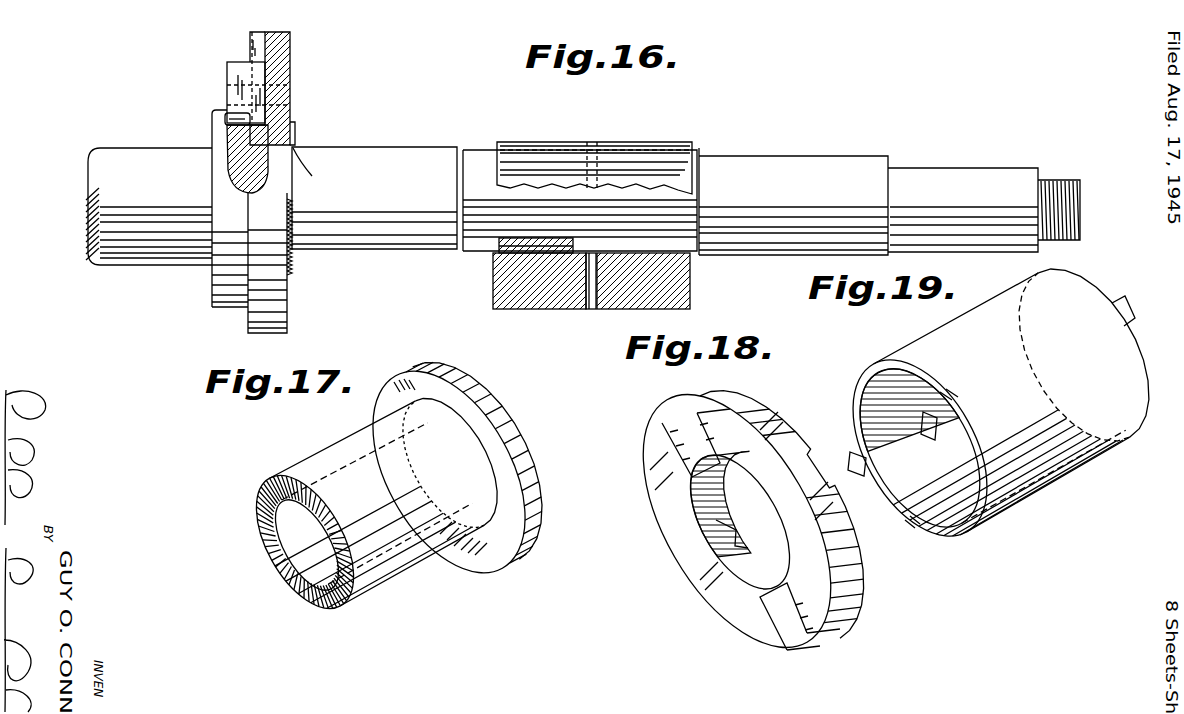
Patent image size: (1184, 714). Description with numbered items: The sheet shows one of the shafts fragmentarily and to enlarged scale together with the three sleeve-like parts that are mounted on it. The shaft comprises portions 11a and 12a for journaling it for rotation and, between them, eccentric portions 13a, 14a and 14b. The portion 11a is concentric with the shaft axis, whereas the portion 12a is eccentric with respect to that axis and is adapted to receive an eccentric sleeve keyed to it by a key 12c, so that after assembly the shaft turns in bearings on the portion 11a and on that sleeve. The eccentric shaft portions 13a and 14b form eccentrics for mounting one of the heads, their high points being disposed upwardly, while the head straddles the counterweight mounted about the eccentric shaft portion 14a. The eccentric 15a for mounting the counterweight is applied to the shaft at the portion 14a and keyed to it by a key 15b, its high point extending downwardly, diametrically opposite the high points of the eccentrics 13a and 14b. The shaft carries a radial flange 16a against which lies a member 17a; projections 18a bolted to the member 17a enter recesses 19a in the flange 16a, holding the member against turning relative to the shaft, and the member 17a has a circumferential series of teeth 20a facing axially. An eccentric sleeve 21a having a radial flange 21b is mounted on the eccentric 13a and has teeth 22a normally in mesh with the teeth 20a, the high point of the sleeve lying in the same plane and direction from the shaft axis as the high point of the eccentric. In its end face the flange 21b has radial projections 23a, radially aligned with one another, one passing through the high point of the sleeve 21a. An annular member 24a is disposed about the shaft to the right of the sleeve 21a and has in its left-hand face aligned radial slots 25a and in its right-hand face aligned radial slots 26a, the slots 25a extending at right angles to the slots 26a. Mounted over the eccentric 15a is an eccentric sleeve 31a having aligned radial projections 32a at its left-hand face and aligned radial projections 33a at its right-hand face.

In FIG. 16, the shaft portion 11a is at (119, 170).
In FIG. 16, the shaft portion 12a is at (958, 158).
In FIG. 16, the key 12c is at (1038, 252).
In FIG. 16, the eccentric shaft portion 13a is at (397, 153).
In FIG. 16, the eccentric shaft portion 14a is at (478, 160).
In FIG. 16, the eccentric shaft portion 14b is at (768, 168).
In FIG. 16, the eccentric 15a is at (637, 122).
In FIG. 16, the key 15b is at (495, 250).
In FIG. 16, the radial flange 16a is at (227, 217).
In FIG. 16, the member 17a is at (272, 133).
In FIG. 16, the projection 18a is at (232, 67).
In FIG. 16, the recess 19a is at (227, 113).
In FIG. 16, the teeth 20a is at (293, 213).
In FIG. 17, the eccentric sleeve 21a is at (323, 453).
In FIG. 17, the radial flange 21b is at (493, 440).
In FIG. 17, the teeth 22a is at (282, 570).
In FIG. 17, the radial projections 23a is at (427, 372).
In FIG. 18, the annular member 24a is at (857, 590).
In FIG. 18, the radial slots 25a is at (700, 411).
In FIG. 18, the radial slots 26a is at (690, 533).
In FIG. 19, the eccentric sleeve 31a is at (912, 340).
In FIG. 19, the radial projections 32a is at (940, 412).
In FIG. 19, the radial projections 33a is at (1128, 322).